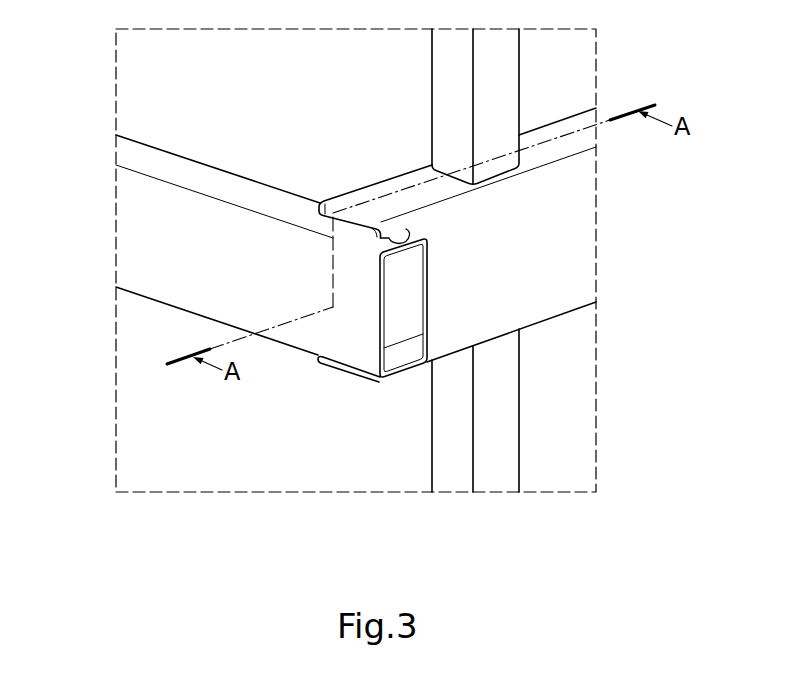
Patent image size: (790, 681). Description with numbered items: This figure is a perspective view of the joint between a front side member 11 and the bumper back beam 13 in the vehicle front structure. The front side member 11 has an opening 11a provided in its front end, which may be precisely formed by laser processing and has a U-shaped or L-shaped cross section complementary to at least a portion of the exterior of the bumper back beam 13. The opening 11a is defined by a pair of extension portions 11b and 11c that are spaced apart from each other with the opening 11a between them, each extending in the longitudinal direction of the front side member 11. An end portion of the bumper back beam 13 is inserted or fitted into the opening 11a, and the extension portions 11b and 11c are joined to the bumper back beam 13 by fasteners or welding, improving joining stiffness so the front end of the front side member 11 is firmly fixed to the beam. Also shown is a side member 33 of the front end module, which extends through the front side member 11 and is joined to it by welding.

The front side member 11 is at (582, 250).
The opening 11a is at (406, 231).
The extension portion 11b is at (358, 200).
The extension portion 11c is at (350, 373).
The bumper back beam 13 is at (136, 236).
The side member 33 is at (490, 463).